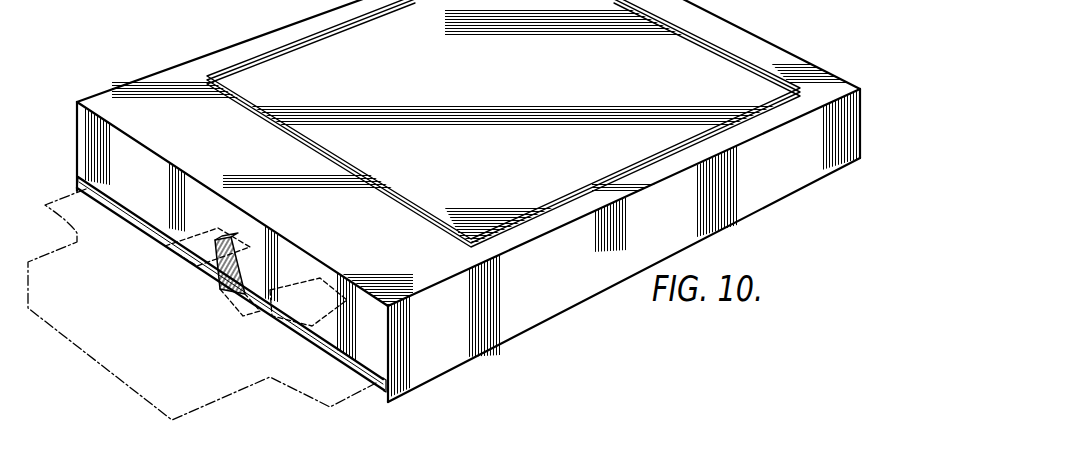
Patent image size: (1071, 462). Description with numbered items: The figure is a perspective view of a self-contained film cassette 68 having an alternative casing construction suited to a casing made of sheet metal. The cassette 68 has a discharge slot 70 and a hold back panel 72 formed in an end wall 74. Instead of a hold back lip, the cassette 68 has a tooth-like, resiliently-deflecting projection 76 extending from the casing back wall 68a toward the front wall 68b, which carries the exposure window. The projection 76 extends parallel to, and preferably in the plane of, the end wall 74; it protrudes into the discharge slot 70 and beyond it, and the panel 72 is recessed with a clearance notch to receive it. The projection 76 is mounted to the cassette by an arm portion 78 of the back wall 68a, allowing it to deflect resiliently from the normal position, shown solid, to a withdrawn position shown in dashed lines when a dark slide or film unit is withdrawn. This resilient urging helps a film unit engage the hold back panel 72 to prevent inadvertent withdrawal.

The film cassette 68 is at (138, 77).
The casing back wall 68a is at (466, 368).
The front wall 68b is at (368, 234).
The discharge slot 70 is at (368, 396).
The hold back panel 72 is at (153, 196).
The end wall 74 is at (92, 145).
The projection 76 is at (216, 275).
The arm portion 78 is at (262, 283).